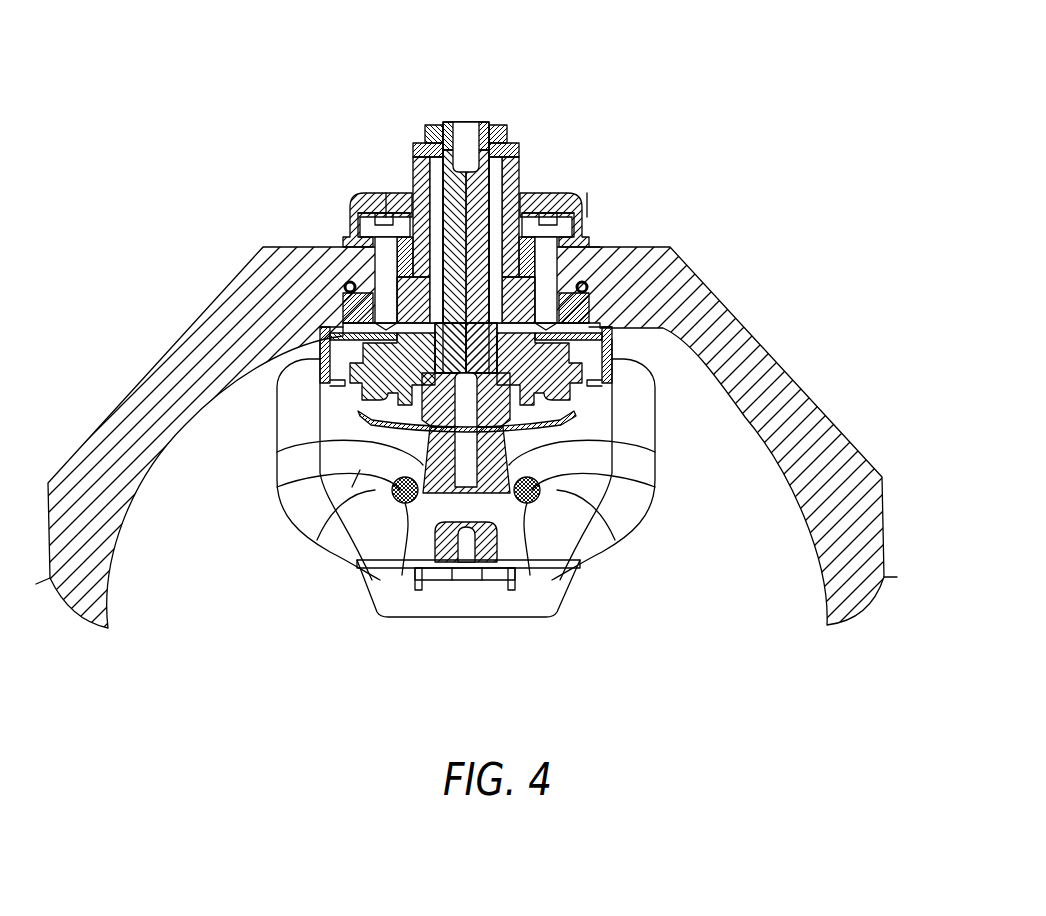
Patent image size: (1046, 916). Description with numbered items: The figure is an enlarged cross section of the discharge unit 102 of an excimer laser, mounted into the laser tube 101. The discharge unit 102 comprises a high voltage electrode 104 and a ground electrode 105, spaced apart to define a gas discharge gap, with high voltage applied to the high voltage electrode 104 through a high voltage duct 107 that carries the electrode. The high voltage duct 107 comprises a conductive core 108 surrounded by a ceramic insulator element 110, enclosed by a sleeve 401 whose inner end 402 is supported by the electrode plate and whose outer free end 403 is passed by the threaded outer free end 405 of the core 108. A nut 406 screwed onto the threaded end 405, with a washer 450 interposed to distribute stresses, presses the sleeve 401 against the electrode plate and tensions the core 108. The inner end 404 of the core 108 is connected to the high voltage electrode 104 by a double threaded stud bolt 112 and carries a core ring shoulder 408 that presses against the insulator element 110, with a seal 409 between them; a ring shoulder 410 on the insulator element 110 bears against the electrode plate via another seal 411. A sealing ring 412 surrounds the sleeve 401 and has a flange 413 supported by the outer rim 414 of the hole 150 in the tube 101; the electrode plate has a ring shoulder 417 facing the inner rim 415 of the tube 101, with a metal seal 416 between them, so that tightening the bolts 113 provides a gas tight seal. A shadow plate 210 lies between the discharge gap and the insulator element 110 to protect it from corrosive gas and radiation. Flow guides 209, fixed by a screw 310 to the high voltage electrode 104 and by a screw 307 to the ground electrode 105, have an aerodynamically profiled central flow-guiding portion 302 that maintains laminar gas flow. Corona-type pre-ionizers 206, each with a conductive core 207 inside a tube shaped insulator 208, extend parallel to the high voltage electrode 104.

The tube 101 is at (800, 390).
The discharge unit 102 is at (628, 664).
The high voltage electrode 104 is at (297, 477).
The ground electrode 105 is at (503, 568).
The high voltage duct 107 is at (582, 190).
The conductive core 108 is at (448, 126).
The insulator element 110 is at (320, 380).
The double threaded stud bolt 112 is at (613, 507).
The bolts 113 is at (396, 192).
The holes 150 is at (594, 248).
The pre-ionizers 206 is at (352, 487).
The conductive core 207 is at (557, 592).
The tube shaped insulator 208 is at (362, 538).
The flow guides 209 is at (262, 428).
The shadow plate 210 is at (330, 442).
The central flow-guiding portion 302 is at (605, 520).
The screw 307 is at (467, 543).
The screw 310 is at (330, 338).
The sleeve 401 is at (518, 178).
The inner end 402 is at (583, 247).
The outer free end 403 is at (515, 155).
The inner end 404 is at (380, 384).
The threaded outer free end 405 is at (462, 122).
The nut 406 is at (503, 124).
The core ring shoulder 408 is at (635, 478).
The seal 409 is at (400, 283).
The ring shoulder 410 is at (560, 398).
The seal 411 is at (343, 283).
The sealing ring 412 is at (386, 193).
The flange 413 is at (345, 225).
The outer rim 414 is at (590, 240).
The inner rim 415 is at (348, 248).
The metal seal 416 is at (355, 300).
The ring shoulder 417 is at (605, 270).
The washer 450 is at (420, 126).